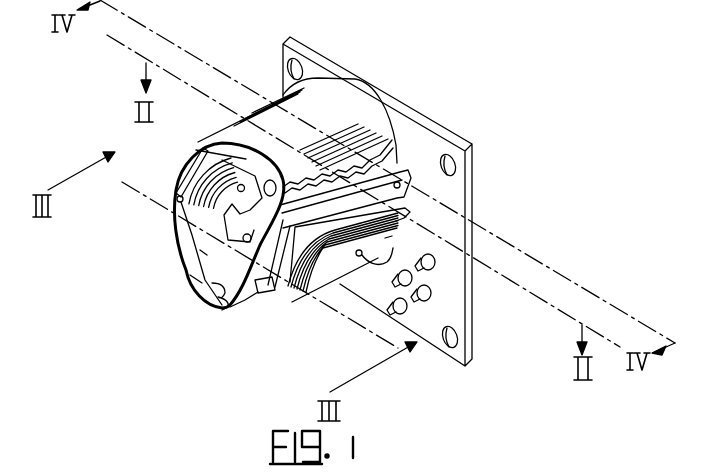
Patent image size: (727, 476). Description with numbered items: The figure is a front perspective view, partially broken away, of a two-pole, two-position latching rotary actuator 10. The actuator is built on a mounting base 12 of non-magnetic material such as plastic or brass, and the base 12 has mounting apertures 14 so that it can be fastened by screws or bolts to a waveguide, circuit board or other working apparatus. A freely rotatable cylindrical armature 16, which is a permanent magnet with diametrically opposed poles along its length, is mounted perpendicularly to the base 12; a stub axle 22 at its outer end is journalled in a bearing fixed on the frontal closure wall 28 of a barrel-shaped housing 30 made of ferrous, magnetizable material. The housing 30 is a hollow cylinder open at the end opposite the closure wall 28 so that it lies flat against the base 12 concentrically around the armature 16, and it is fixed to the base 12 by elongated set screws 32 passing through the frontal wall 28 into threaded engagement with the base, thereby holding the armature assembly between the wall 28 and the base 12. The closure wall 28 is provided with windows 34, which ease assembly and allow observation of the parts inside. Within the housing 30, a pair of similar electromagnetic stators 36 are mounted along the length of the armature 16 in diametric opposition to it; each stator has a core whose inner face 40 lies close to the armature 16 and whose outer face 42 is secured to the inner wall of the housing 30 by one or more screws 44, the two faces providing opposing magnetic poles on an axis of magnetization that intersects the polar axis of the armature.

The two-position latching rotary actuator 10 is at (128, 330).
The mounting base 12 is at (473, 308).
The mounting apertures 14 is at (452, 165).
The cylindrical armature 16 is at (370, 167).
The stub axle 22 is at (247, 242).
The frontal closure wall 28 is at (202, 283).
The barrel-shaped housing 30 is at (224, 141).
The set screws 32 is at (211, 302).
The windows 34 is at (207, 255).
The electromagnetic stators 36 is at (385, 240).
The inner face 40 is at (260, 293).
The outer face 42 is at (322, 281).
The screws 44 is at (388, 255).